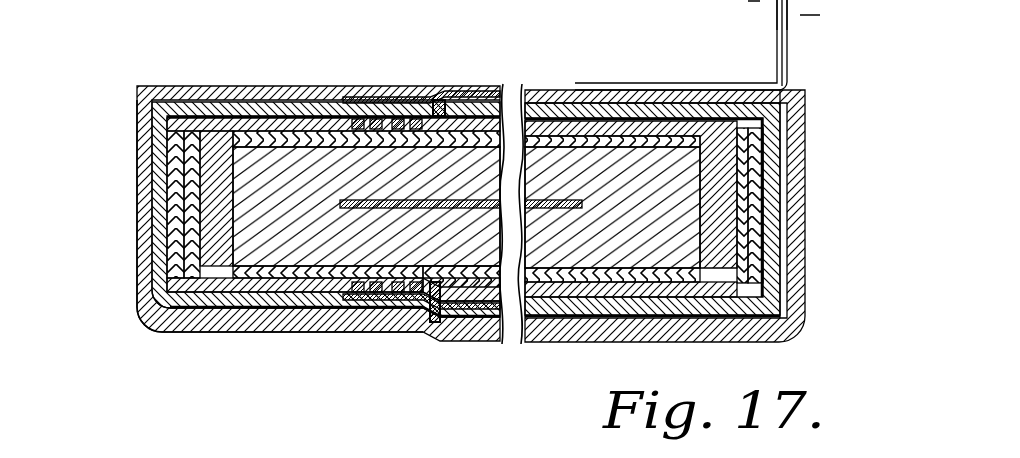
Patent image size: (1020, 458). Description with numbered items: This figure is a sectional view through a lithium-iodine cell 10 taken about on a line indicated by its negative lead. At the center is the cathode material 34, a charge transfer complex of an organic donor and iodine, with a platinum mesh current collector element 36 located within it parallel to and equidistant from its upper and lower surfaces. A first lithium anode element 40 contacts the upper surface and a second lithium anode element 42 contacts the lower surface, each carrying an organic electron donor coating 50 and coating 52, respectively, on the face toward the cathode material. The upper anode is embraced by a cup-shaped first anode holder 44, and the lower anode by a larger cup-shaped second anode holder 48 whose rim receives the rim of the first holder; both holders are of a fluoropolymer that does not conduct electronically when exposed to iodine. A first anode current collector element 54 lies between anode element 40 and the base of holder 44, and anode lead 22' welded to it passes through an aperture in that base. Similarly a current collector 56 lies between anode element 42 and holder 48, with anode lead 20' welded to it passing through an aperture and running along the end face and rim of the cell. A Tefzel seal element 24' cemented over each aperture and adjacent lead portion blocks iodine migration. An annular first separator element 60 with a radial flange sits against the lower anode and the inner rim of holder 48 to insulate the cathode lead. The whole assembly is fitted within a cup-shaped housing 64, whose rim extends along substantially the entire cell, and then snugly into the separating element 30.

The cell 10 is at (176, 66).
The cup-shaped housing 64 is at (190, 87).
The first anode holder 44 is at (272, 112).
The first lithium anode element 40 is at (247, 125).
The first separator element 60 is at (193, 207).
The cathode material 34 is at (650, 215).
The coating 52 is at (345, 270).
The second lithium anode element 42 is at (230, 283).
The current collector 56 is at (555, 300).
The coating 50 is at (325, 112).
The seal element 24' is at (434, 220).
The anode lead 20' is at (651, 212).
The anode lead 22' is at (745, 21).
The first anode current collector element 54 is at (523, 86).
The separating element 30 is at (137, 150).
The second anode holder 48 is at (200, 333).
The current collector element 36 is at (255, 333).